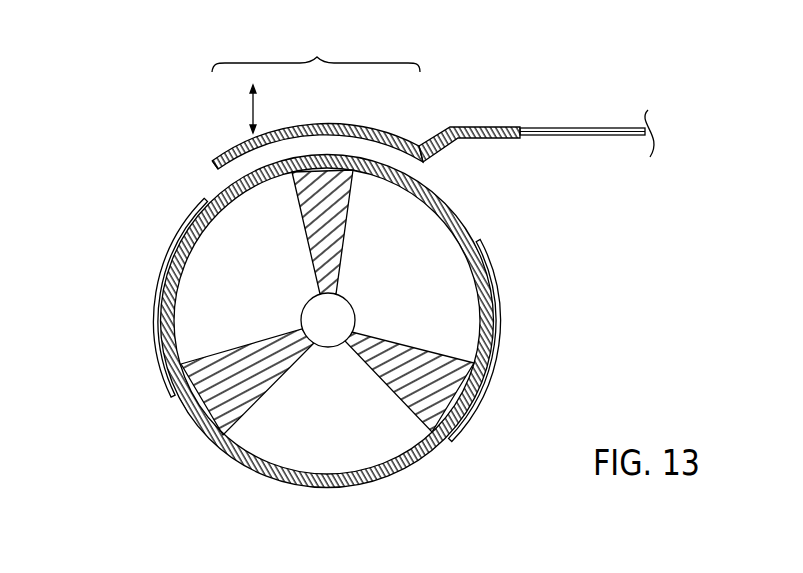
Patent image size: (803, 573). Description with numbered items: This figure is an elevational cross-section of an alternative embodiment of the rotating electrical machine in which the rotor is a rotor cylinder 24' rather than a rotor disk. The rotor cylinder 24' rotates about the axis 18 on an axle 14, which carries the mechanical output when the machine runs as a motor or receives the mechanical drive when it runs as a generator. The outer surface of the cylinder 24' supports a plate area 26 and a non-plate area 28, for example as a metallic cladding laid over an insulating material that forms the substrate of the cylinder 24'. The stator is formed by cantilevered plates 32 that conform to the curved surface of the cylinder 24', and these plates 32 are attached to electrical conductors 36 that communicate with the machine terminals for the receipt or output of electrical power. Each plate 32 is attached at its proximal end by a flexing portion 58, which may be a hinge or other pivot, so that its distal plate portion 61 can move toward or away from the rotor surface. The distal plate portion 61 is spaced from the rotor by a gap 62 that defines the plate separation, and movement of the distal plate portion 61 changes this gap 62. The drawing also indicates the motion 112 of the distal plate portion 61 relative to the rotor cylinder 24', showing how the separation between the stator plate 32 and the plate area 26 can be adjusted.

The axle 14 is at (328, 322).
The axis 18 is at (329, 342).
The rotor cylinder 24' is at (213, 421).
The plate area 26 is at (155, 337).
The non-plate area 28 is at (364, 488).
The plates 32 is at (367, 126).
The electrical conductors 36 is at (582, 130).
The flexing portion 58 is at (436, 142).
The distal plate portion 61 is at (317, 57).
The gap 62 is at (233, 172).
The gap distance 112 is at (252, 106).